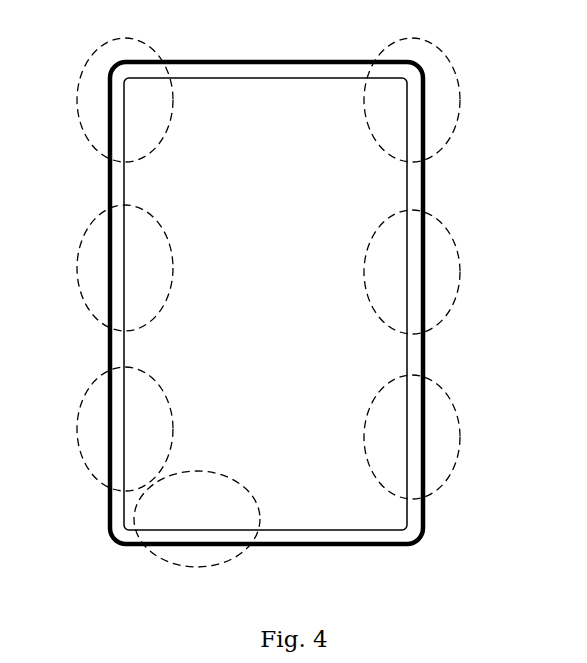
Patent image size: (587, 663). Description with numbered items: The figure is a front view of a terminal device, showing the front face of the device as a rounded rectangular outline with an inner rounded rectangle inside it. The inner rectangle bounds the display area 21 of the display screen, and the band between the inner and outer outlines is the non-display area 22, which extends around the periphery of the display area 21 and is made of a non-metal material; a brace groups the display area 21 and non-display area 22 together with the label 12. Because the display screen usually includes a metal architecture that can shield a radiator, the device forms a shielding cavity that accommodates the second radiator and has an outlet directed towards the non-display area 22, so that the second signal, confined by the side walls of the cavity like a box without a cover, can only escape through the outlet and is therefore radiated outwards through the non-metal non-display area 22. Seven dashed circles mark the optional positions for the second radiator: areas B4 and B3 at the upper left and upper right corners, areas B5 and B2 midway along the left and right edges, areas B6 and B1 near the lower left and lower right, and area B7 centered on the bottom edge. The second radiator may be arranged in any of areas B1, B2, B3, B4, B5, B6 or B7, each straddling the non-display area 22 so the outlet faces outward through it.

The decorative cover 12 is at (333, 303).
The display area 21 is at (393, 422).
The non-display area 22 is at (425, 485).
The area B1 is at (370, 410).
The area B2 is at (447, 230).
The area B3 is at (447, 62).
The area B4 is at (97, 53).
The area B5 is at (97, 220).
The area B6 is at (97, 382).
The area B7 is at (243, 547).